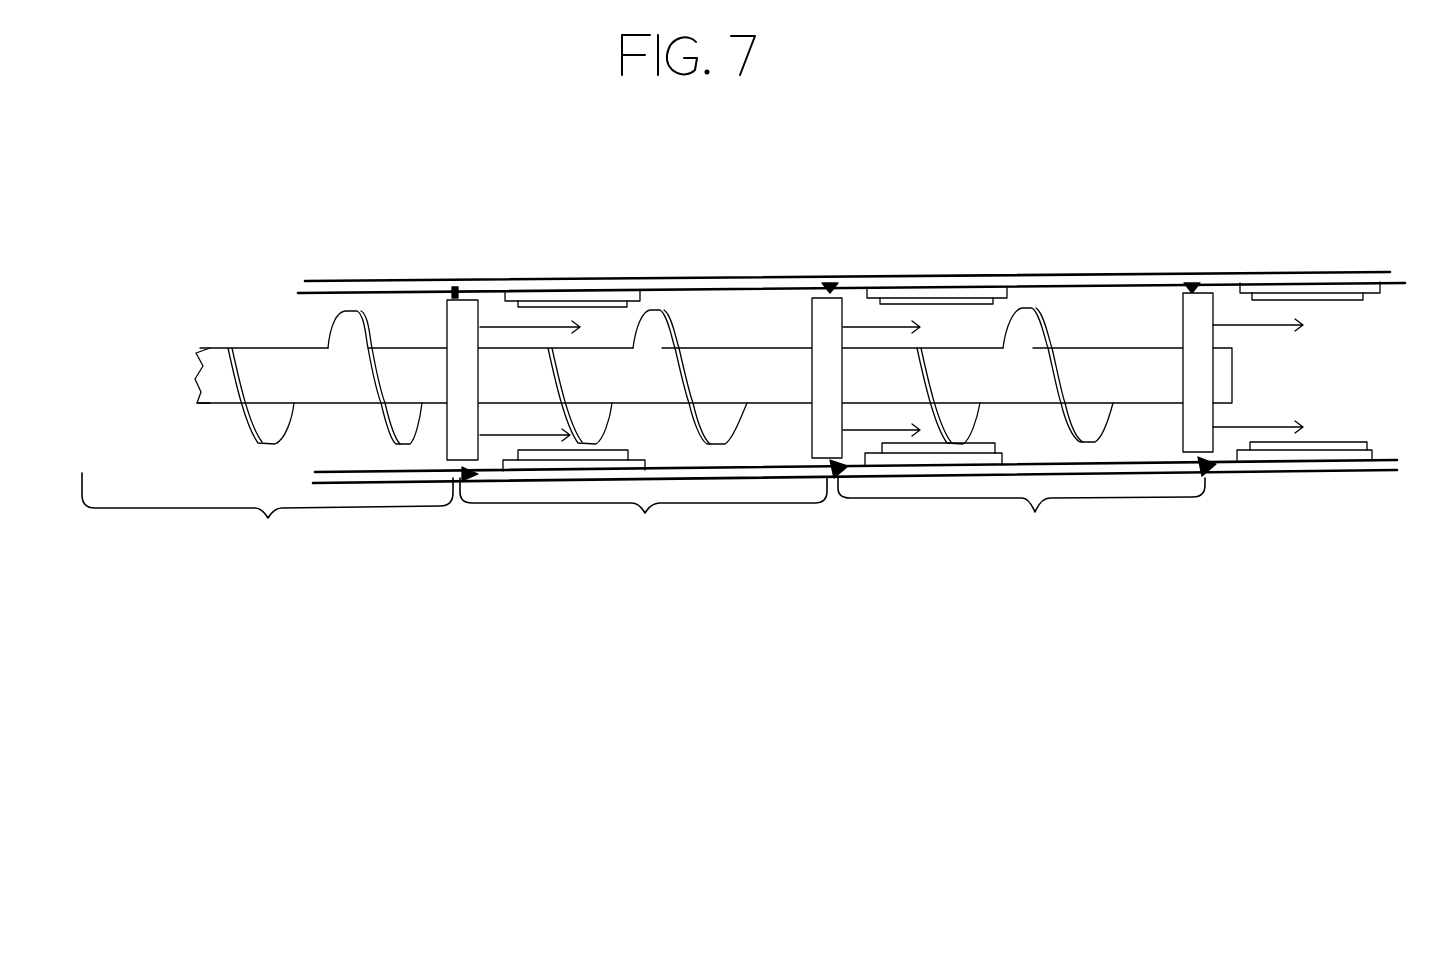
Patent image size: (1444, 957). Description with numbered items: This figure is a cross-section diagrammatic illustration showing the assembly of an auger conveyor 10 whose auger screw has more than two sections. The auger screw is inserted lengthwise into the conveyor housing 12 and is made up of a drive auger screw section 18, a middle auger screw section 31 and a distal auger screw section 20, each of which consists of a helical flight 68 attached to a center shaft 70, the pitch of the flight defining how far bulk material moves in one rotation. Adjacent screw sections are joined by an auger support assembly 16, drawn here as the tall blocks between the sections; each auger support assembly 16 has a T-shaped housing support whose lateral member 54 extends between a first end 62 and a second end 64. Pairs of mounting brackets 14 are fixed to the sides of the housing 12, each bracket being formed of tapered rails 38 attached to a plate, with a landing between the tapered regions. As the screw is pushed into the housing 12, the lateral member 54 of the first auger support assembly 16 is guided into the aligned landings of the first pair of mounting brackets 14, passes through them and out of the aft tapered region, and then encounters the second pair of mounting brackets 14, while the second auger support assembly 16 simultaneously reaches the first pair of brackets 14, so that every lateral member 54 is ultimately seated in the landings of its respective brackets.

The auger conveyor 10 is at (1352, 243).
The conveyor housing 12 is at (478, 281).
The mounting bracket 14 is at (625, 291).
The auger support assembly 16 is at (440, 333).
The drive auger screw section 18 is at (268, 518).
The distal auger screw section 20 is at (1035, 512).
The middle auger screw section 31 is at (645, 513).
The rails 38 is at (553, 300).
The lateral member 54 is at (1218, 306).
The first end 62 is at (450, 286).
The second end 64 is at (470, 480).
The helical flight 68 is at (658, 310).
The center shaft 70 is at (770, 347).